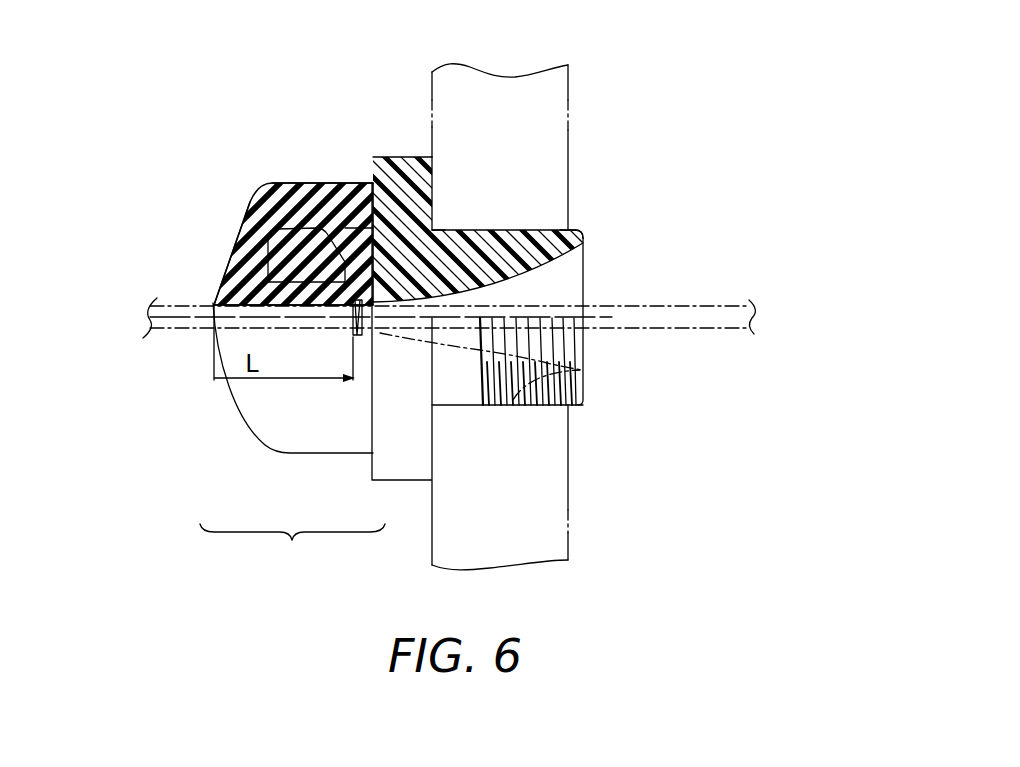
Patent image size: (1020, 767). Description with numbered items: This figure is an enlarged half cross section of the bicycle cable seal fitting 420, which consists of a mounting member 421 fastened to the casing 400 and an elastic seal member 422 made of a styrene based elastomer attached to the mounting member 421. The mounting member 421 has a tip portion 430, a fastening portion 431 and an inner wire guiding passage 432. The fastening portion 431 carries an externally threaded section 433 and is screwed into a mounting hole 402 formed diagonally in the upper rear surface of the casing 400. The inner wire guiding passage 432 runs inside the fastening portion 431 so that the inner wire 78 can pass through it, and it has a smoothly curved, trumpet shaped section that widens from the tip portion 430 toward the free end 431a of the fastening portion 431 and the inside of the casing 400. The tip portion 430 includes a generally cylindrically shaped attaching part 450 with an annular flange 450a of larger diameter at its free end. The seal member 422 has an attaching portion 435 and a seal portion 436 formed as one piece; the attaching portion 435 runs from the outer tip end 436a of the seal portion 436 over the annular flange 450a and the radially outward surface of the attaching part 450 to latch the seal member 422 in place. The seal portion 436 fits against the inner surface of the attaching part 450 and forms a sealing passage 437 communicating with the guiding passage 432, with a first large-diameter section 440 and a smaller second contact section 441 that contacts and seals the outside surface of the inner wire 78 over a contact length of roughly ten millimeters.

The inner wire 78 is at (688, 306).
The casing 400 is at (567, 507).
The mounting hole 402 is at (583, 370).
The cable seal fitting 420 is at (547, 317).
The mounting member 421 is at (445, 217).
The elastic seal member 422 is at (279, 181).
The tip portion 430 is at (287, 235).
The fastening portion 431 is at (560, 224).
The free end 431a is at (583, 243).
The inner wire guiding passage 432 is at (560, 285).
The externally threaded section 433 is at (569, 250).
The attaching portion 435 is at (336, 204).
The seal portion 436 is at (232, 303).
The outer tip end 436a is at (223, 285).
The sealing passage 437 is at (292, 550).
The first large-diameter section 440 is at (357, 337).
The second contact section 441 is at (280, 305).
The cylindrically shaped attaching part 450 is at (353, 275).
The annular flange 450a is at (280, 305).